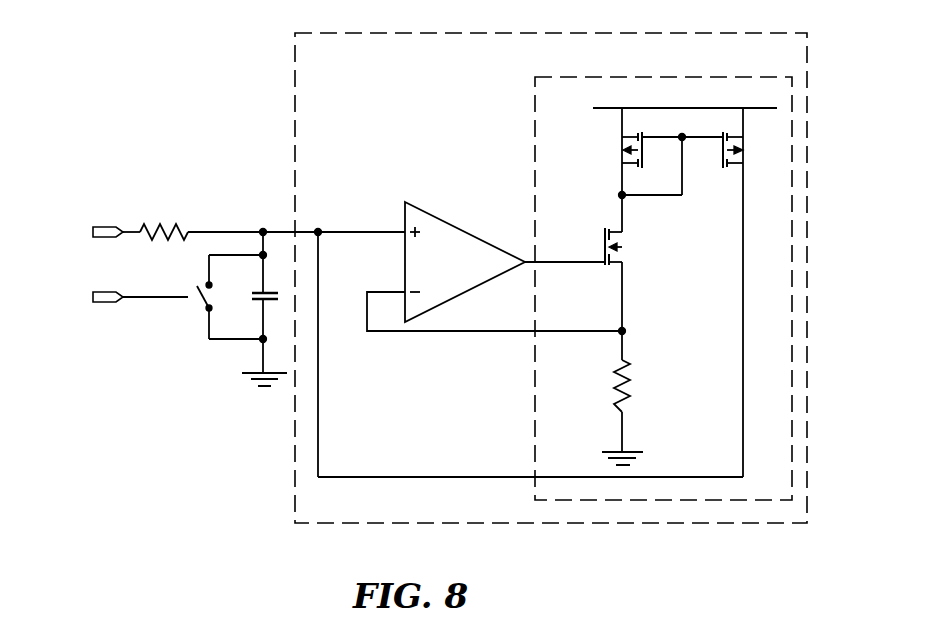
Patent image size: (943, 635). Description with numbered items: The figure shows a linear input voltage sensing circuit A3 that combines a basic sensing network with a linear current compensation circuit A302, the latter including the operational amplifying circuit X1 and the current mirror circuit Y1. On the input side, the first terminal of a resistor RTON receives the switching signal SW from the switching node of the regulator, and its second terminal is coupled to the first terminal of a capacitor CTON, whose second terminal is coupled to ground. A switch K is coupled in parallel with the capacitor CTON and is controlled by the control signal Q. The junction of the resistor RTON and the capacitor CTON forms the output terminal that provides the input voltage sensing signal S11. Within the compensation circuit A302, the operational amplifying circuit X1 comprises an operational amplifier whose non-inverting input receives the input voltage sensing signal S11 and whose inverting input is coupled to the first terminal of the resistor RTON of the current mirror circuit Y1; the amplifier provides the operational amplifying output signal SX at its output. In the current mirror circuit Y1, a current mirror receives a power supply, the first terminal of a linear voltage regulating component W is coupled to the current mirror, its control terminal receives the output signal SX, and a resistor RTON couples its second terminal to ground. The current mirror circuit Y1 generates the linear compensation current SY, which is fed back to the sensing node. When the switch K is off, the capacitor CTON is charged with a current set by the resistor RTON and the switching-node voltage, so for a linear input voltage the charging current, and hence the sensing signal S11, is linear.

The linear current compensation circuit A302 is at (530, 32).
The linear input voltage sensing circuit A3 is at (250, 97).
The current mirror circuit Y1 is at (633, 76).
The operational amplifying circuit X1 is at (440, 212).
The linear voltage regulating component W is at (622, 330).
The switch K is at (225, 297).
The capacitor CTON is at (249, 309).
The resistor RTON is at (385, 305).
The switching signal SW is at (85, 233).
The control signal Q is at (131, 297).
The input voltage sensing signal S11 is at (257, 220).
The linear compensation current SY is at (311, 220).
The operational amplifying output signal SX is at (565, 251).